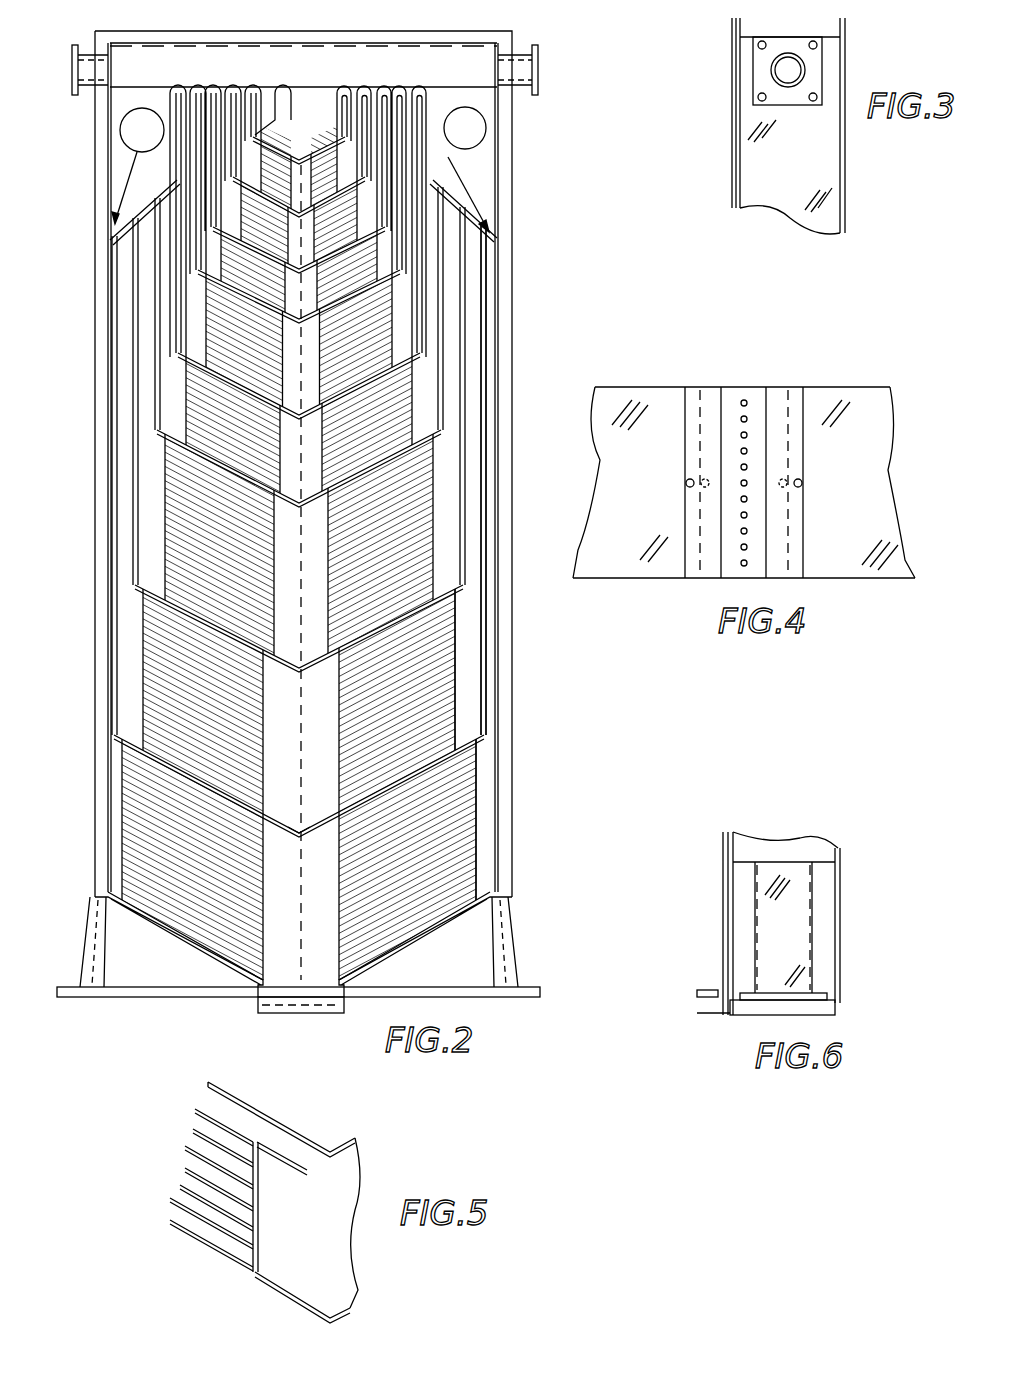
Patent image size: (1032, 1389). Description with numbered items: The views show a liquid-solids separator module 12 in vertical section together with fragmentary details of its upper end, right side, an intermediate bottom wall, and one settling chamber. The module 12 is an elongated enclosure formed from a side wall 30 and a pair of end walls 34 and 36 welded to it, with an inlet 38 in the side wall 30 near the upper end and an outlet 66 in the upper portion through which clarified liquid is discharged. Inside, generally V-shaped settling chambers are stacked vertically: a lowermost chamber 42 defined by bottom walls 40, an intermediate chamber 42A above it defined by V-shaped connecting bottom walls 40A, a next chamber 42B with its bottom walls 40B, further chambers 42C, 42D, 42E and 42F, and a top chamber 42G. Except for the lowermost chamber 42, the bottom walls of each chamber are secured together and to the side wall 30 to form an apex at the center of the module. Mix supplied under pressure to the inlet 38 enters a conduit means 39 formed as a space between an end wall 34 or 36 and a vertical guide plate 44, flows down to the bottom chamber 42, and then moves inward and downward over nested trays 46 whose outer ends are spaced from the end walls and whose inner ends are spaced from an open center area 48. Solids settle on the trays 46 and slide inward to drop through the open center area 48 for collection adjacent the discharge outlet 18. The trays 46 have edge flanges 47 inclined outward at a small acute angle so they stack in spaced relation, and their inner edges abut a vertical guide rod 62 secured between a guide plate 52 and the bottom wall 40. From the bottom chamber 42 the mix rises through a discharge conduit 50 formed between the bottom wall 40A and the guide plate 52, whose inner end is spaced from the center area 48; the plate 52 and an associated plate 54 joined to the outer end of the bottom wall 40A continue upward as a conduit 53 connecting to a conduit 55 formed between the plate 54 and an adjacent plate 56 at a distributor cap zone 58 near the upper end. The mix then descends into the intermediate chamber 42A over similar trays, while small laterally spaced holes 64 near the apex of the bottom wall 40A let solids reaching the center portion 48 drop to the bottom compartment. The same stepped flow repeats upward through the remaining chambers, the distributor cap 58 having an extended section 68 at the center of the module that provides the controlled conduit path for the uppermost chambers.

In FIG. 2, the separator module 12 is at (515, 288).
In FIG. 3, the separator module 12 is at (848, 186).
In FIG. 6, the separator module 12 is at (848, 948).
In FIG. 2, the discharge outlet 18 is at (268, 1003).
In FIG. 2, the side wall 30 is at (122, 160).
In FIG. 2, the end wall 34 is at (108, 346).
In FIG. 2, the end wall 36 is at (497, 220).
In FIG. 2, the inlet 38 is at (121, 118).
In FIG. 2, the conduit means 39 is at (113, 298).
In FIG. 2, the bottom walls 40 is at (167, 930).
In FIG. 4, the bottom walls 40 is at (757, 392).
In FIG. 5, the bottom walls 40 is at (225, 1265).
In FIG. 2, the V-shaped connecting bottom walls 40A is at (265, 803).
In FIG. 2, the plate 40B is at (275, 652).
In FIG. 2, the lowermost chamber 42 is at (487, 810).
In FIG. 2, the intermediate chamber 42A is at (455, 658).
In FIG. 2, the next vertically adjacent chamber 42B is at (438, 482).
In FIG. 2, the heat exchange section 42C is at (430, 400).
In FIG. 2, the heat exchange section 42D is at (408, 318).
In FIG. 2, the heat exchange section 42E is at (395, 262).
In FIG. 2, the heat exchange section 42F is at (368, 207).
In FIG. 2, the top chamber 42G is at (350, 162).
In FIG. 2, the guide plates 44 is at (115, 402).
In FIG. 5, the trays 46 is at (210, 1240).
In FIG. 5, the edge flanges 47 is at (195, 1180).
In FIG. 2, the open center area 48 is at (300, 836).
In FIG. 2, the discharge conduit 50 is at (460, 745).
In FIG. 2, the guide plate 52 is at (470, 762).
In FIG. 5, the guide plate 52 is at (290, 1143).
In FIG. 2, the conduit 53 is at (478, 614).
In FIG. 2, the plate 54 is at (487, 690).
In FIG. 2, the conduit 55 is at (468, 525).
In FIG. 2, the plate 56 is at (500, 246).
In FIG. 2, the distributor cap zone 58 is at (470, 212).
In FIG. 5, the guide rod 62 is at (259, 1200).
In FIG. 4, the holes 64 is at (744, 404).
In FIG. 2, the outlet 66 is at (522, 50).
In FIG. 3, the outlet 66 is at (805, 70).
In FIG. 2, the extended section 68 is at (447, 87).